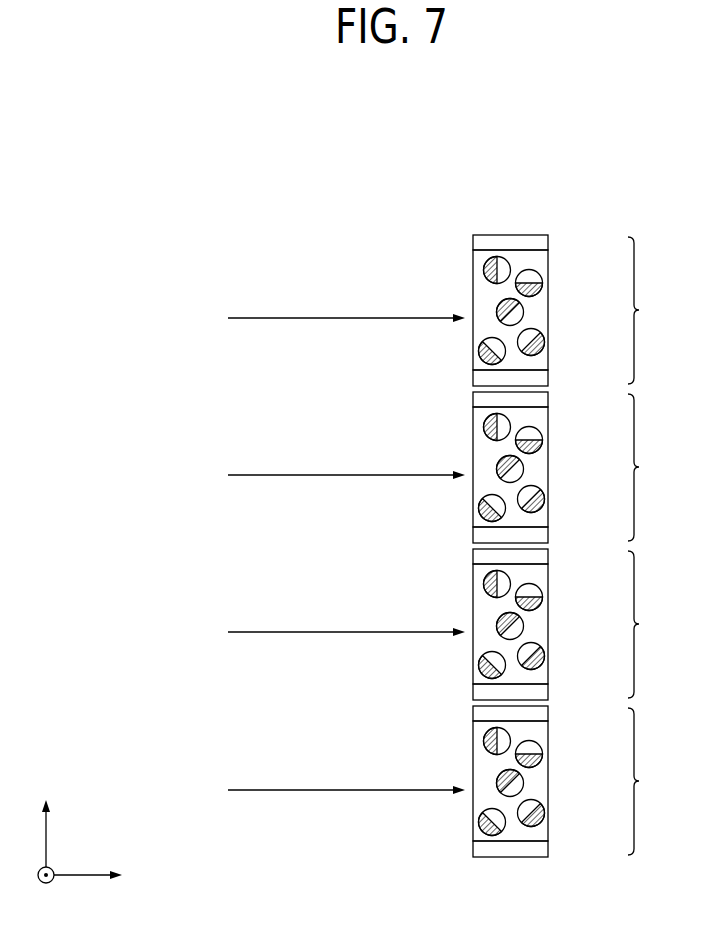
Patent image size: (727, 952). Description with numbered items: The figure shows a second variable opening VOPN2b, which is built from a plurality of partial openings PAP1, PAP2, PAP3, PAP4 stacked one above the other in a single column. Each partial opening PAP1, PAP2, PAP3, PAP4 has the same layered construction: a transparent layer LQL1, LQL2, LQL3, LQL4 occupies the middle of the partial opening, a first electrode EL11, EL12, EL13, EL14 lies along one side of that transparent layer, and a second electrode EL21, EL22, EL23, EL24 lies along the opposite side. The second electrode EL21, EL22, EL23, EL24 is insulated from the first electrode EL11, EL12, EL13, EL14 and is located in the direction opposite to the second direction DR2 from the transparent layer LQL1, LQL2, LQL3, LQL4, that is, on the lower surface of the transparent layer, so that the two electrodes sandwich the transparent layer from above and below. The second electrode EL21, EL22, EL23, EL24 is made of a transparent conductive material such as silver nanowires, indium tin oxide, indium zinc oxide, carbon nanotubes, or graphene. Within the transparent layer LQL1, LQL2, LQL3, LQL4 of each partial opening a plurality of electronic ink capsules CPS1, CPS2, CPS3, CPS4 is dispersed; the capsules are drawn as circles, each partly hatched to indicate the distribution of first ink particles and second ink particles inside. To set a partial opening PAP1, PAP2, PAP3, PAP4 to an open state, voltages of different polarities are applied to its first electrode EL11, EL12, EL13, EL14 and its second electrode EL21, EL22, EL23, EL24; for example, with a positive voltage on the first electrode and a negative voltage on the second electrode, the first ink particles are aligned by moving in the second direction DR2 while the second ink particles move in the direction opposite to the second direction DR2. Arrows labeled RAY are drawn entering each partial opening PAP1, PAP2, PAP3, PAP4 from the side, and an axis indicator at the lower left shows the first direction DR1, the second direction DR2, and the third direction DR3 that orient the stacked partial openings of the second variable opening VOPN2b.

The second variable opening VOPN2b is at (585, 140).
The partial opening PAP1 is at (581, 310).
The partial opening PAP2 is at (581, 467).
The partial opening PAP3 is at (581, 624).
The partial opening PAP4 is at (581, 781).
The first electrode EL11 is at (548, 242).
The first electrode EL12 is at (548, 399).
The first electrode EL13 is at (548, 556).
The first electrode EL14 is at (548, 713).
The second electrode EL21 is at (548, 377).
The second electrode EL22 is at (548, 534).
The second electrode EL23 is at (548, 691).
The second electrode EL24 is at (548, 848).
The transparent layer LQL1 is at (545, 312).
The transparent layer LQL2 is at (545, 469).
The transparent layer LQL3 is at (545, 626).
The transparent layer LQL4 is at (545, 783).
The electronic ink capsules CPS1 is at (541, 280).
The electronic ink capsules CPS2 is at (541, 437).
The electronic ink capsules CPS3 is at (541, 594).
The electronic ink capsules CPS4 is at (541, 751).
The light ray RAY is at (302, 554).
The first direction DR1 is at (108, 876).
The second direction DR2 is at (46, 818).
The third direction DR3 is at (46, 890).